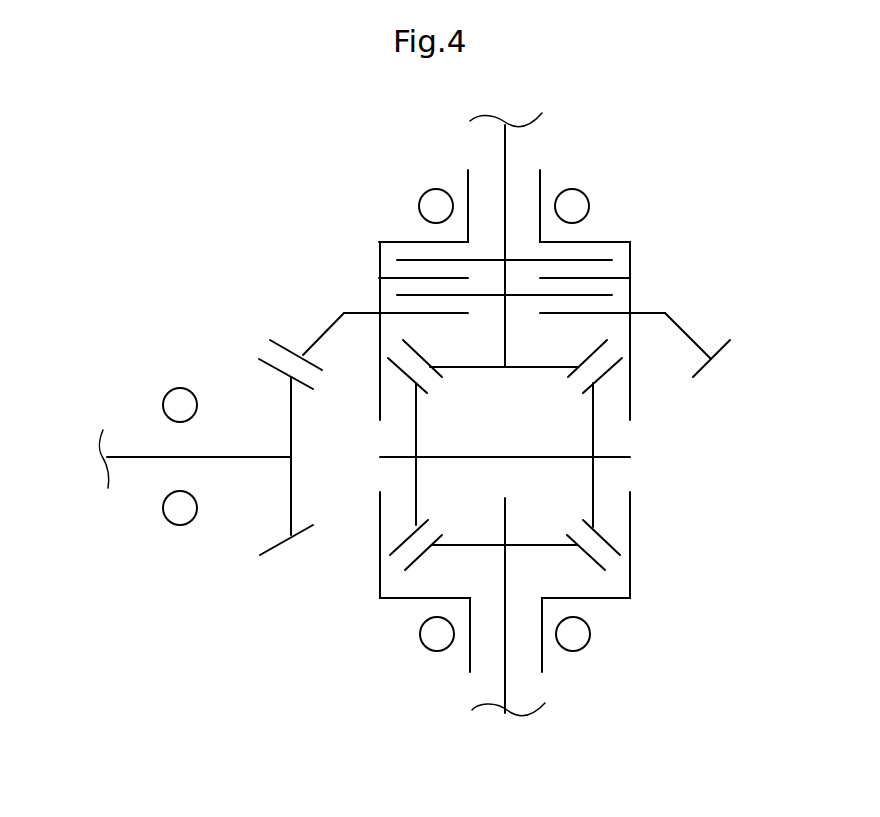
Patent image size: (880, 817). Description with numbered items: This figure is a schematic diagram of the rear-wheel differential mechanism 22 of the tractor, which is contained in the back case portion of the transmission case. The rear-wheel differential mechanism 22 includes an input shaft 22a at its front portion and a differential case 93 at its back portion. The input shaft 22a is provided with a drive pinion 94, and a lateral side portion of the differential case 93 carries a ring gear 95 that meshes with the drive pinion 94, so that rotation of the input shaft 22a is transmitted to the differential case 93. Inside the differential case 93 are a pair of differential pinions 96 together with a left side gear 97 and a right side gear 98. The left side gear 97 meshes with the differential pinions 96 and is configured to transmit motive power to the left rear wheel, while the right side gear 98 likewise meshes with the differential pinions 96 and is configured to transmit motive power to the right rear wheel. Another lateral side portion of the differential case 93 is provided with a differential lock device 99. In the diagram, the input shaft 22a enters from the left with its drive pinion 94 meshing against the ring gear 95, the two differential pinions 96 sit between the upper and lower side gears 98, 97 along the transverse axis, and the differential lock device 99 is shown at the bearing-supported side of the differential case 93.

The rear-wheel differential mechanism 22 is at (213, 210).
The input shaft 22a is at (132, 457).
The differential case 93 is at (403, 602).
The drive pinion 94 is at (287, 402).
The ring gear 95 is at (357, 313).
The differential pinions 96 is at (413, 507).
The left side gear 97 is at (558, 547).
The right side gear 98 is at (555, 367).
The differential lock device 99 is at (606, 240).